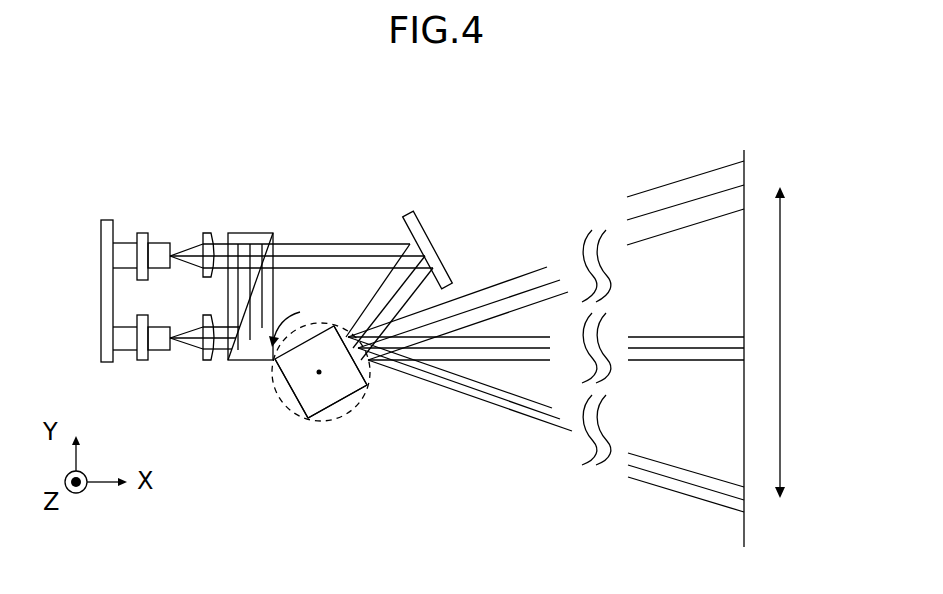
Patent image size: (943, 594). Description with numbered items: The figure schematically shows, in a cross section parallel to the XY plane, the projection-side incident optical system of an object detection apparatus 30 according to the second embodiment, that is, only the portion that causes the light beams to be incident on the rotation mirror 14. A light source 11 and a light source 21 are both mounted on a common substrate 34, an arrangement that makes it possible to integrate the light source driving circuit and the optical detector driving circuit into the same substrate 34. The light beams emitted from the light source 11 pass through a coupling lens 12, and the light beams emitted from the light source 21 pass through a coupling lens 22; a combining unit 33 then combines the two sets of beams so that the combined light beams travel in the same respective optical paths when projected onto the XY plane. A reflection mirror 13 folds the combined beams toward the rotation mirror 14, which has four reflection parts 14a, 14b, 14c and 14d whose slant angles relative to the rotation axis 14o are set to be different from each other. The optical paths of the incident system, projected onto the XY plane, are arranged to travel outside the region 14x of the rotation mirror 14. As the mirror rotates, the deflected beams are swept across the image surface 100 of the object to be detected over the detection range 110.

The object detection apparatus 30 is at (84, 151).
The substrate 34 is at (107, 220).
The light source 11 is at (142, 233).
The light source 21 is at (145, 362).
The coupling lens 12 is at (208, 233).
The coupling lens 22 is at (208, 362).
The combining unit 33 is at (252, 233).
The reflection mirror 13 is at (408, 214).
The rotation mirror 14 is at (311, 428).
The reflection part 14a is at (368, 384).
The reflection part 14b is at (304, 330).
The reflection part 14c is at (292, 397).
The reflection part 14d is at (348, 398).
The rotation axis 14o is at (319, 373).
The region of the rotation mirror 14x is at (336, 421).
The image surface 100 is at (745, 157).
The detection range 110 is at (781, 337).